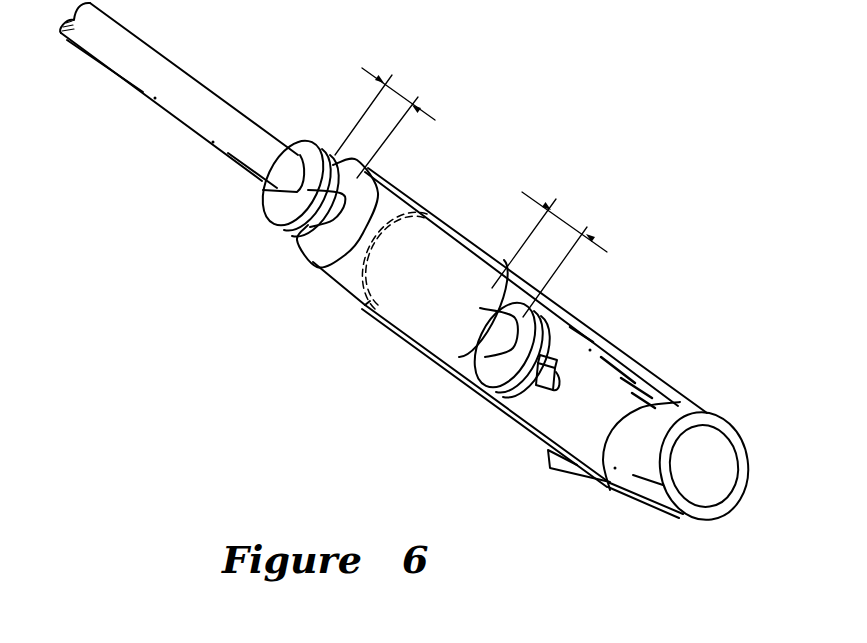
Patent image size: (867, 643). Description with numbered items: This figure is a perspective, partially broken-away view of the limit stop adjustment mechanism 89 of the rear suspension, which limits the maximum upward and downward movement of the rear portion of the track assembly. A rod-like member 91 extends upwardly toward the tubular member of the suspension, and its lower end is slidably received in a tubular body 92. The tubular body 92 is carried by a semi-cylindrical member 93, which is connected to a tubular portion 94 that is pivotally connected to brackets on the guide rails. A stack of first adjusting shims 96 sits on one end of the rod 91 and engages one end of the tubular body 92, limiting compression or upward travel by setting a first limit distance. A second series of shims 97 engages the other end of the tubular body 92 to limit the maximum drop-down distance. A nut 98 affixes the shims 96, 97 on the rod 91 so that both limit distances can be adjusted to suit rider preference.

The limit stop mechanism 89 is at (272, 72).
The rod-like member 91 is at (196, 117).
The tubular body 92 is at (417, 310).
The semi-cylindrical member 93 is at (653, 373).
The tubular portion 94 is at (647, 495).
The first adjusting shims 96 is at (295, 225).
The second series of shims 97 is at (497, 390).
The nut 98 is at (543, 377).